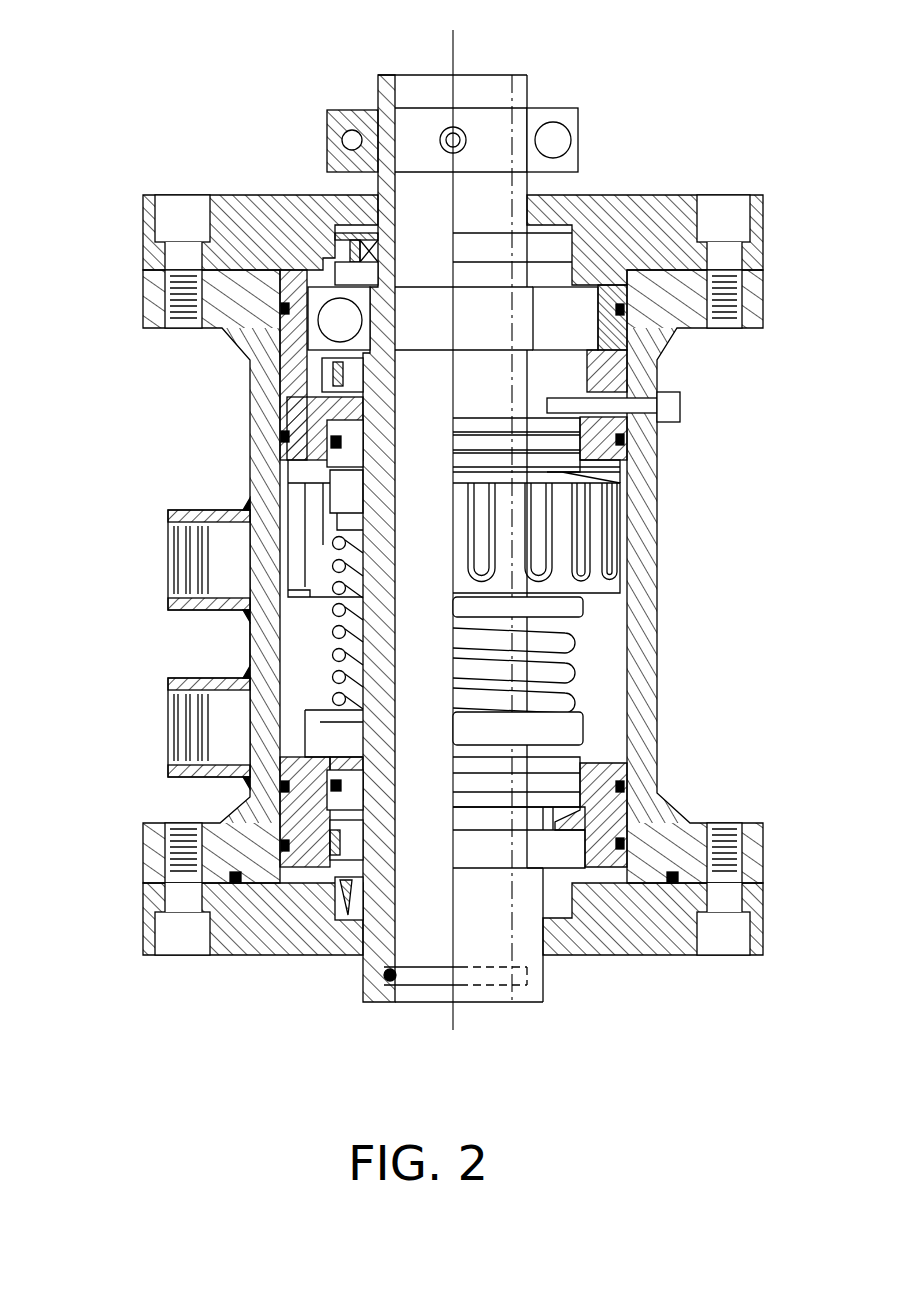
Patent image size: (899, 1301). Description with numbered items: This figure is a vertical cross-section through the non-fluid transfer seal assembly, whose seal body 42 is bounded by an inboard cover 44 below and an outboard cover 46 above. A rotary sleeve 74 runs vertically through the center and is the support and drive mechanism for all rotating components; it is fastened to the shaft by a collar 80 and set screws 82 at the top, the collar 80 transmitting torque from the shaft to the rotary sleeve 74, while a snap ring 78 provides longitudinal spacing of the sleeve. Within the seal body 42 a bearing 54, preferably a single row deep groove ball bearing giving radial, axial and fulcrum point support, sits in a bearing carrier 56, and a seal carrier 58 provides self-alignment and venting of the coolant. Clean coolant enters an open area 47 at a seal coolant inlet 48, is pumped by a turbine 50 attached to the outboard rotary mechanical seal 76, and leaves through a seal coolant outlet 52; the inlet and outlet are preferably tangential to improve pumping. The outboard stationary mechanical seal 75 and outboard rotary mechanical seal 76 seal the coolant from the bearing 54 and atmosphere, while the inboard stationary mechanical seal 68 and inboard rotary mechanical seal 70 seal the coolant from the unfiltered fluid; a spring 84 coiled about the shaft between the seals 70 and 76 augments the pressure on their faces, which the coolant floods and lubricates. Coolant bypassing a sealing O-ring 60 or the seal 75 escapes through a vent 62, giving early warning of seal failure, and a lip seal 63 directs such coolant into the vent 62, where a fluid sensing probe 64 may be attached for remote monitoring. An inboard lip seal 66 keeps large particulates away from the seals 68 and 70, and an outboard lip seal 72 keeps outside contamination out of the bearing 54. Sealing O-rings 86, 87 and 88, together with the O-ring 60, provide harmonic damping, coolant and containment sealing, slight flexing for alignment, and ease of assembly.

The seal body 42 is at (657, 585).
The inboard cover 44 is at (678, 955).
The outboard cover 46 is at (638, 194).
The open area 47 is at (250, 668).
The seal coolant inlet 48 is at (168, 735).
The turbine 50 is at (597, 528).
The seal coolant outlet 52 is at (168, 557).
The bearing 54 is at (600, 328).
The bearing carrier 56 is at (293, 405).
The seal carrier 58 is at (300, 862).
The sealing O-ring 60 is at (627, 440).
The vent 62 is at (683, 413).
The lip seal 63 is at (284, 440).
The fluid sensing probe 64 is at (680, 405).
The inboard lip seal 66 is at (353, 905).
The inboard stationary mechanical seal 68 is at (593, 763).
The inboard rotary mechanical seal 70 is at (577, 748).
The outboard lip seal 72 is at (357, 255).
The rotary sleeve 74 is at (385, 1003).
The outboard stationary mechanical seal 75 is at (598, 466).
The outboard rotary mechanical seal 76 is at (565, 472).
The snap ring 78 is at (345, 622).
The collar 80 is at (549, 108).
The set screws 82 is at (445, 128).
The spring 84 is at (575, 652).
The sealing O-ring 86 is at (283, 846).
The sealing O-ring 87 is at (283, 787).
The sealing O-ring 88 is at (283, 310).